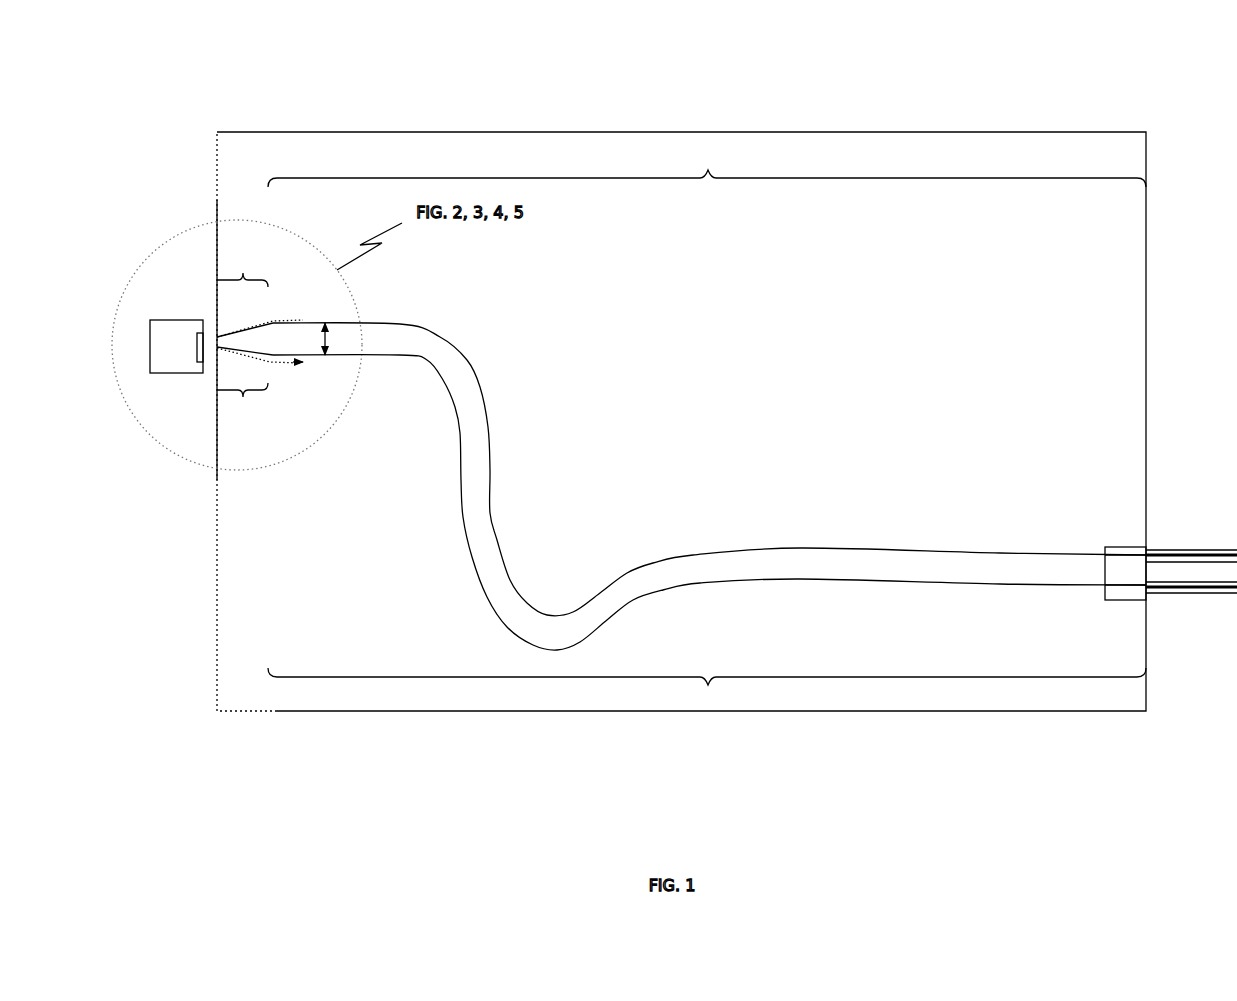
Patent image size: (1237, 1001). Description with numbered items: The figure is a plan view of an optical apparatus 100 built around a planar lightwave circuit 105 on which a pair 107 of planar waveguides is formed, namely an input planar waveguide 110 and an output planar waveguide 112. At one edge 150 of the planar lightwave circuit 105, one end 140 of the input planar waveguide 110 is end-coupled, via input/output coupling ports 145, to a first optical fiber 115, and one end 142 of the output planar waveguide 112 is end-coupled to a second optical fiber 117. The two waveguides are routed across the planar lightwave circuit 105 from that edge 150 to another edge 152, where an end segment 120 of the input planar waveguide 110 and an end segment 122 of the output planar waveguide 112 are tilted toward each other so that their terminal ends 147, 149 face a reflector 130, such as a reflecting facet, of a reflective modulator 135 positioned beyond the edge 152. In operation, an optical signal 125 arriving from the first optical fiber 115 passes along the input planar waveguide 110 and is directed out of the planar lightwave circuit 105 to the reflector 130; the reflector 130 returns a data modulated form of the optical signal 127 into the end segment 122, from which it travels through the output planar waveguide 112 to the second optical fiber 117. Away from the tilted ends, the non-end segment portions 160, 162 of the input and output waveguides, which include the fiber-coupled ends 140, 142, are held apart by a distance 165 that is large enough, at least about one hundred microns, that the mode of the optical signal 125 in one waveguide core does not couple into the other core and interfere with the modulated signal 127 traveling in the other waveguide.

The optical apparatus 100 is at (188, 118).
The planar lightwave circuit 105 is at (855, 265).
The pair of input and output planar waveguides 107 is at (681, 486).
The input planar waveguide 110 is at (835, 552).
The output planar waveguide 112 is at (783, 582).
The first optical fiber 115 is at (1180, 553).
The second optical fiber 117 is at (1183, 595).
The end segment of the input planar waveguide 120 is at (243, 273).
The end segment of the output planar waveguide 122 is at (243, 398).
The optical signal 125 is at (288, 320).
The data modulated form of the optical signal 127 is at (287, 367).
The reflector 130 is at (207, 337).
The reflective modulator 135 is at (176, 346).
The end of the input planar waveguide 140 is at (1144, 555).
The end of the output planar waveguide 142 is at (1146, 587).
The input/output coupling ports 145 is at (1103, 547).
The terminal end of the input waveguide end segment 147 is at (217, 337).
The terminal end of the output waveguide end segment 149 is at (217, 347).
The edge of the planar lightwave circuit 150 is at (1146, 225).
The another edge of the planar lightwave circuit 152 is at (217, 197).
The non-end segment portion of the input planar waveguide 160 is at (707, 167).
The non-end segment portion of the output planar waveguide 162 is at (707, 686).
The distance 165 is at (330, 330).